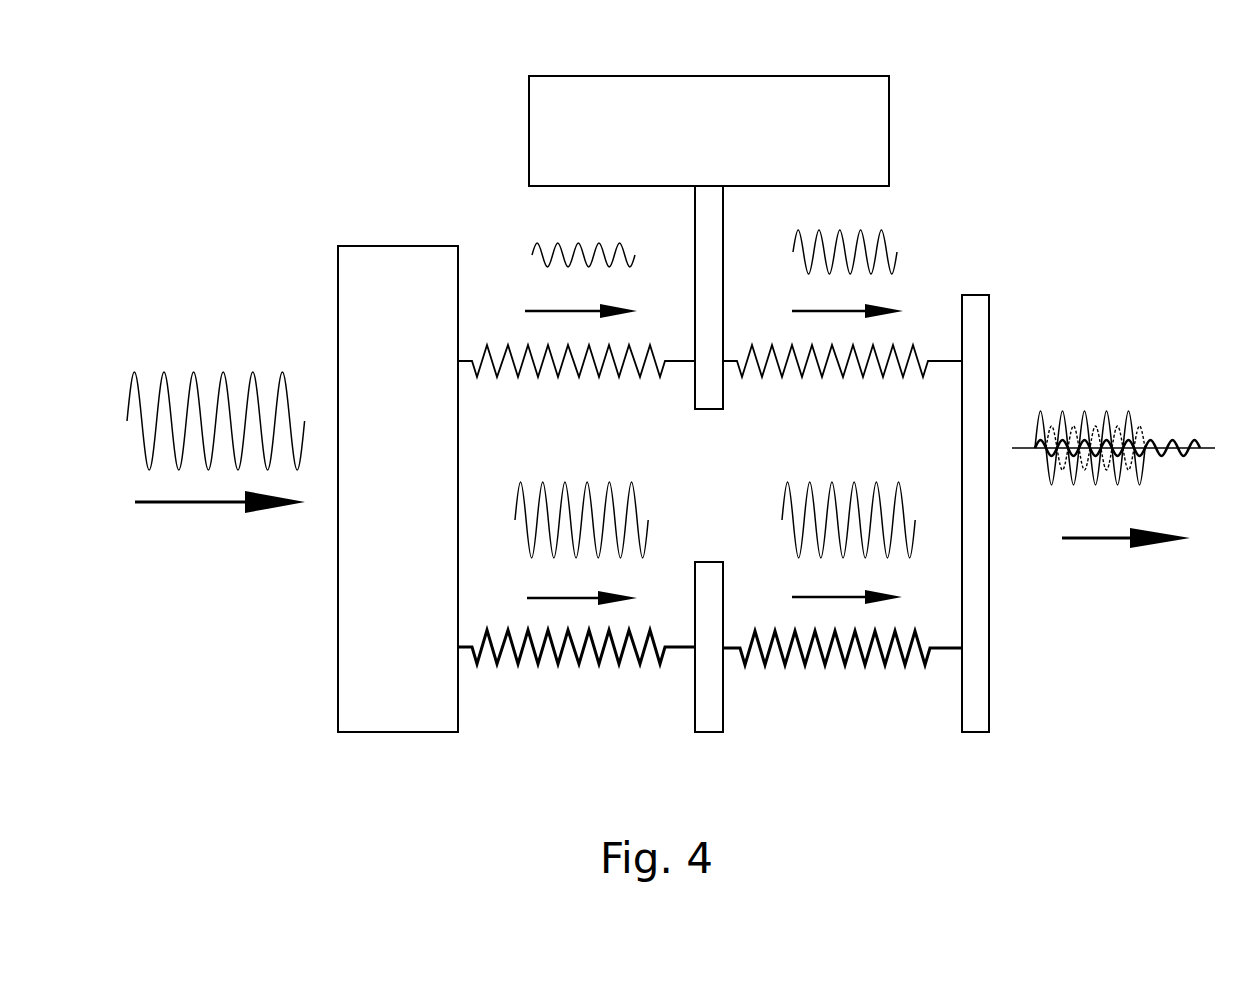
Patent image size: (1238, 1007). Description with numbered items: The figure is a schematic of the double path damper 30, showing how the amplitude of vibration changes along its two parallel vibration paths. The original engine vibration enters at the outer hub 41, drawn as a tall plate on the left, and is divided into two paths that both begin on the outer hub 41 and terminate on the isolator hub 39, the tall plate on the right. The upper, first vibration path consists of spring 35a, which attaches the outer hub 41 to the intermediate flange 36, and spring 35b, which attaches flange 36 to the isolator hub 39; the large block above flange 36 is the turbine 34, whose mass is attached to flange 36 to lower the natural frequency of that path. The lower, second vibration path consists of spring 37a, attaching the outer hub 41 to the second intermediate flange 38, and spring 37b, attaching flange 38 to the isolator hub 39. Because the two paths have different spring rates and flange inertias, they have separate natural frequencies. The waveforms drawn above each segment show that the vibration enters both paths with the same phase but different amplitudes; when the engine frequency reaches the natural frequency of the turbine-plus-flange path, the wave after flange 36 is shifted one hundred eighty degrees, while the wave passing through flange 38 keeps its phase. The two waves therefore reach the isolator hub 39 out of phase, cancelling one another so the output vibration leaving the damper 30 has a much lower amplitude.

The double path damper 30 is at (1116, 130).
The turbine 34 is at (612, 76).
The spring 35a is at (547, 335).
The spring 35b is at (913, 330).
The flange 36 is at (724, 238).
The spring 37a is at (558, 670).
The spring 37b is at (825, 668).
The flange 38 is at (708, 735).
The isolator hub 39 is at (977, 295).
The outer hub 41 is at (398, 245).